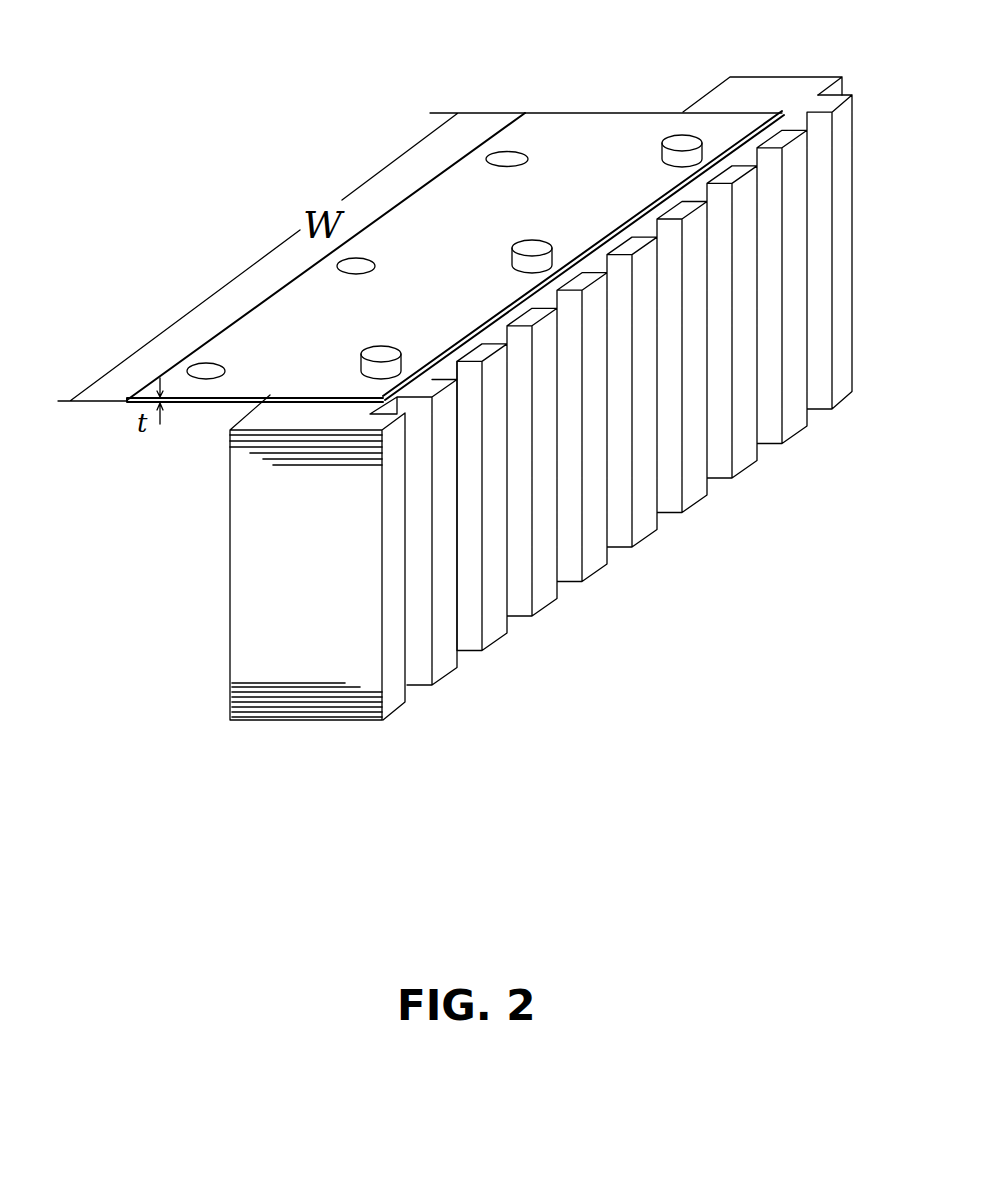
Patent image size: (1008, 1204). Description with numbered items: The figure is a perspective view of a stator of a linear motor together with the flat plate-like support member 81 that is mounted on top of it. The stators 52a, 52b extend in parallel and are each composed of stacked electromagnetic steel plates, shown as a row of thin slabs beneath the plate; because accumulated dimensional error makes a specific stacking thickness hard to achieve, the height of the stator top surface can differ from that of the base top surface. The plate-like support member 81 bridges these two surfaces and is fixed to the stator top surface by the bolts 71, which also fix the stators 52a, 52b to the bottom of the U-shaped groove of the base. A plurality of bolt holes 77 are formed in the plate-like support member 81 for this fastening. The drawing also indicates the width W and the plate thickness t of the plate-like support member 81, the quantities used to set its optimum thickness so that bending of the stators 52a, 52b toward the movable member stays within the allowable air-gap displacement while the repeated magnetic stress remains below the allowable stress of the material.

The plate-like support member 81 is at (455, 211).
The bolt holes 77 is at (500, 154).
The bolts 71 is at (663, 140).
The stator 52a is at (541, 449).
The stator 52b is at (540, 610).